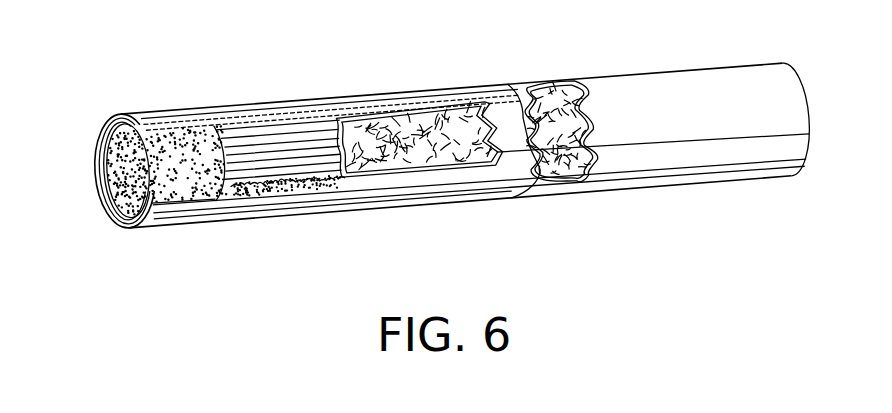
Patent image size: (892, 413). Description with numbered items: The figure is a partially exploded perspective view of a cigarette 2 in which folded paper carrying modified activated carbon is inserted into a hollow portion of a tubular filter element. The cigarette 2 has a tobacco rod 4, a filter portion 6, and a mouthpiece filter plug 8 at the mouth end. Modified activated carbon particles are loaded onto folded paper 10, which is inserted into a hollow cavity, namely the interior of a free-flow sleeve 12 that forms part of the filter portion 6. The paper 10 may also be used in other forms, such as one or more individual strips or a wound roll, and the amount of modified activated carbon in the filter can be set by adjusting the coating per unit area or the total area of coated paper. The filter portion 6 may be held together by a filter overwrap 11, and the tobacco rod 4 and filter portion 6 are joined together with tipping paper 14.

The cigarette 2 is at (328, 76).
The tobacco rod 4 is at (675, 78).
The filter portion 6 is at (204, 94).
The mouthpiece filter plug 8 is at (104, 119).
The folded paper 10 is at (232, 172).
The filter overwrap 11 is at (117, 224).
The free-flow sleeve 12 is at (315, 178).
The tipping paper 14 is at (425, 93).